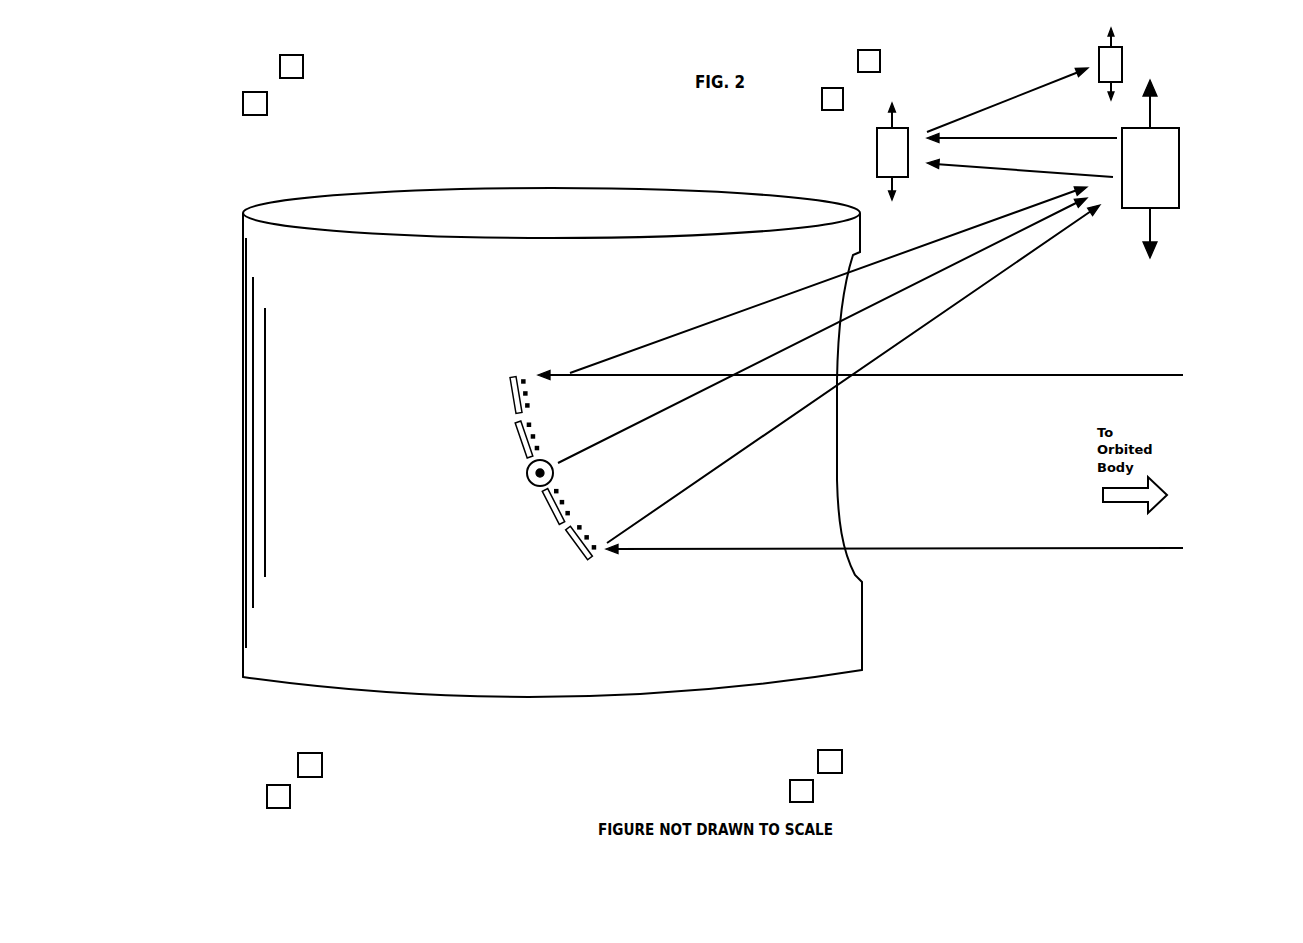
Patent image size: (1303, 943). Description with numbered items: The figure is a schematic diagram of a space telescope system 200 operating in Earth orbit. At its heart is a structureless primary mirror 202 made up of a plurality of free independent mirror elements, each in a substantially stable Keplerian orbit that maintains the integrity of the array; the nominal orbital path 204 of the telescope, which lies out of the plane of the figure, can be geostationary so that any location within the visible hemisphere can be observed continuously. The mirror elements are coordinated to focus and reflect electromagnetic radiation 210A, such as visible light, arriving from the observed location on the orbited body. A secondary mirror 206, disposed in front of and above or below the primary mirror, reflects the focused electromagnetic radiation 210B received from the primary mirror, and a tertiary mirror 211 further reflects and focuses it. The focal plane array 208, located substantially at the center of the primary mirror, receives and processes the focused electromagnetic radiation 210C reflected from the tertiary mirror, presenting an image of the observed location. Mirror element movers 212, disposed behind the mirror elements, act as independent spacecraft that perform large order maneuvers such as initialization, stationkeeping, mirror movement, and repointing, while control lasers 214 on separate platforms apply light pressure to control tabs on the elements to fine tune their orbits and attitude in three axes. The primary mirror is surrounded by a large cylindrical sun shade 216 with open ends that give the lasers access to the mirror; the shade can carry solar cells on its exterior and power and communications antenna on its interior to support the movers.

The space telescope system 200 is at (647, 143).
The structureless primary mirror 202 is at (483, 451).
The nominal orbital path 204 is at (538, 455).
The secondary mirror 206 is at (1180, 133).
The focal plane array 208 is at (1122, 45).
The tertiary mirror 211 is at (873, 164).
The electromagnetic radiation 210A is at (1020, 366).
The focused electromagnetic radiation 210B is at (693, 323).
The focused electromagnetic radiation 210C is at (975, 108).
The mirror element movers 212 is at (508, 397).
The control lasers 214 is at (860, 97).
The cylindrical sun shade 216 is at (268, 500).